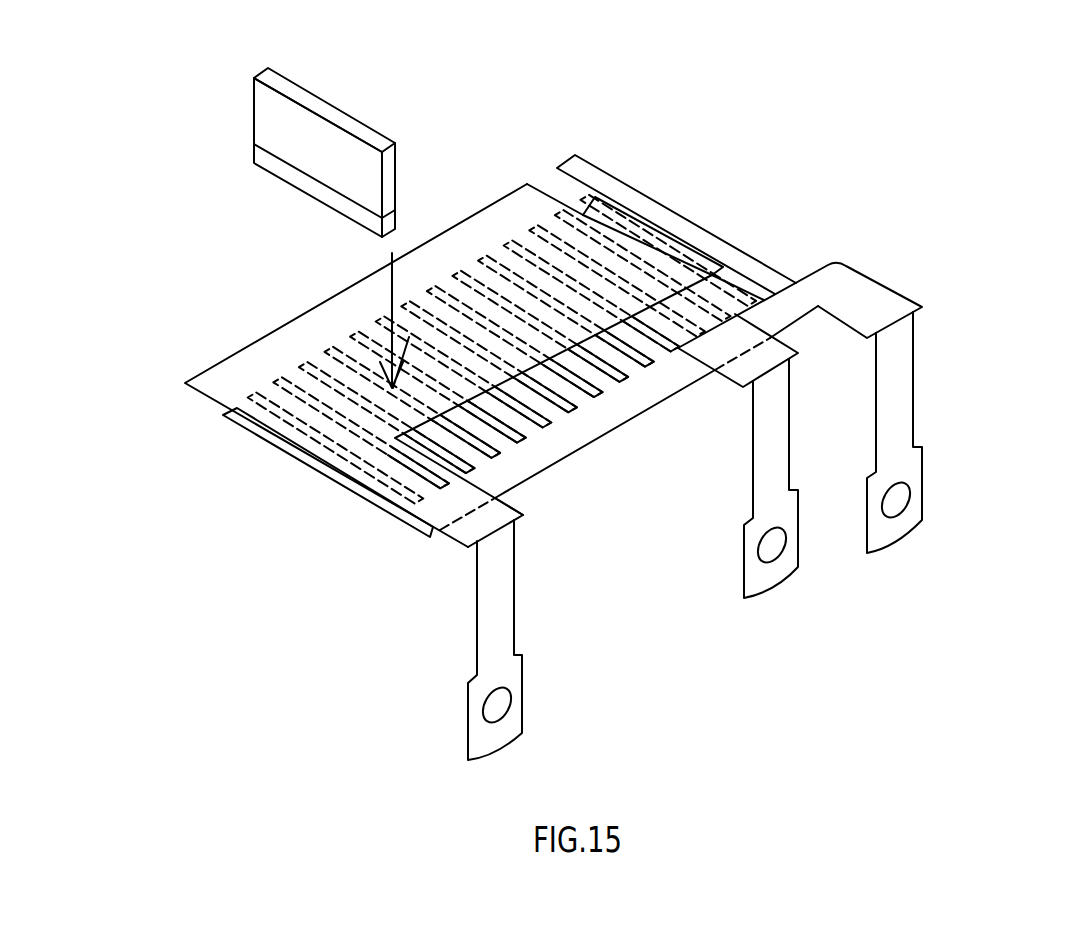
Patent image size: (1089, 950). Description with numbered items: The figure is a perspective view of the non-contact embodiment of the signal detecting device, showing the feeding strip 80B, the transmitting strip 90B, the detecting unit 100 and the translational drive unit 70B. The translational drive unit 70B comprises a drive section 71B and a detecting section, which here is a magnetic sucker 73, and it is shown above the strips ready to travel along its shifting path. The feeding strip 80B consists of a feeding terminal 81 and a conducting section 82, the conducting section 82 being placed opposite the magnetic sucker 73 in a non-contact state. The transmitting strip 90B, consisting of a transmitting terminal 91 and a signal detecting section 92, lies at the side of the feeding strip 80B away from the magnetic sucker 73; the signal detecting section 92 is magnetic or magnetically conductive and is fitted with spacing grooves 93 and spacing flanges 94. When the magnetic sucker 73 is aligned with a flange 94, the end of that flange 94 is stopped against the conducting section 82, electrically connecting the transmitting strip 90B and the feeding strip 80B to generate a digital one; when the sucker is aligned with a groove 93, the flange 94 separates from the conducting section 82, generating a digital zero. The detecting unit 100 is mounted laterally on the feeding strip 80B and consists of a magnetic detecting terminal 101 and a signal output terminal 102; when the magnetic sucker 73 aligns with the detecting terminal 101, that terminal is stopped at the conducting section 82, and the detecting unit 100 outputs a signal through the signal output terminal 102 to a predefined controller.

The translational drive unit 70B is at (249, 124).
The drive section 71B is at (266, 68).
The magnetic sucker 73 is at (277, 177).
The conducting section 82 is at (280, 340).
The spacing groove 93 is at (583, 215).
The spacing flange 94 is at (588, 205).
The detecting terminal 101 is at (588, 170).
The detecting unit 100 is at (781, 255).
The signal output terminal 102 is at (780, 580).
The transmitting strip 90B is at (861, 426).
The transmitting terminal 91 is at (922, 515).
The signal detecting section 92 is at (515, 468).
The feeding strip 80B is at (373, 584).
The feeding terminal 81 is at (468, 735).